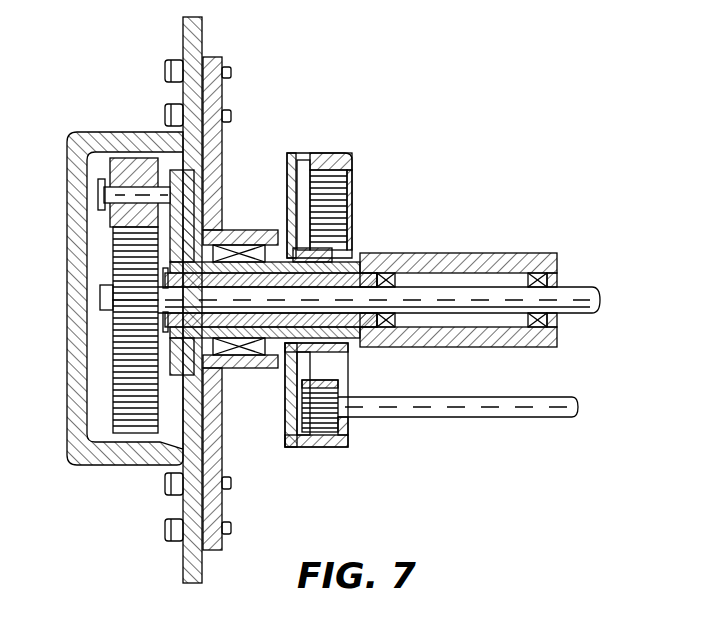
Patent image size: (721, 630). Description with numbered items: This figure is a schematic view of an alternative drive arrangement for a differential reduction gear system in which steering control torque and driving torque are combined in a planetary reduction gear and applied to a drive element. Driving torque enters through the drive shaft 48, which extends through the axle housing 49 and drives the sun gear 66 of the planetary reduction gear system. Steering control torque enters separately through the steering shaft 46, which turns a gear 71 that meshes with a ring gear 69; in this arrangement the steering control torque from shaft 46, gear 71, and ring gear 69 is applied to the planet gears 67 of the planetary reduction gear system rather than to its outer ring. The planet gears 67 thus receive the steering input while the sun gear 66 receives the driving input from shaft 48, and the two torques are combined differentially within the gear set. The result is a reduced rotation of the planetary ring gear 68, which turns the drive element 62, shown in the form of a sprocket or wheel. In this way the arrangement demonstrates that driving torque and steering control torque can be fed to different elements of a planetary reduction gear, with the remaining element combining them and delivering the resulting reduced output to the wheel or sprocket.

The drive element 62 is at (203, 21).
The planet gears 67 is at (122, 163).
The sun gear 66 is at (113, 243).
The planetary ring gear 68 is at (113, 393).
The axle housing 49 is at (437, 253).
The drive shaft 48 is at (572, 291).
The gear 71 is at (338, 383).
The ring gear 69 is at (313, 447).
The steering shaft 46 is at (500, 414).